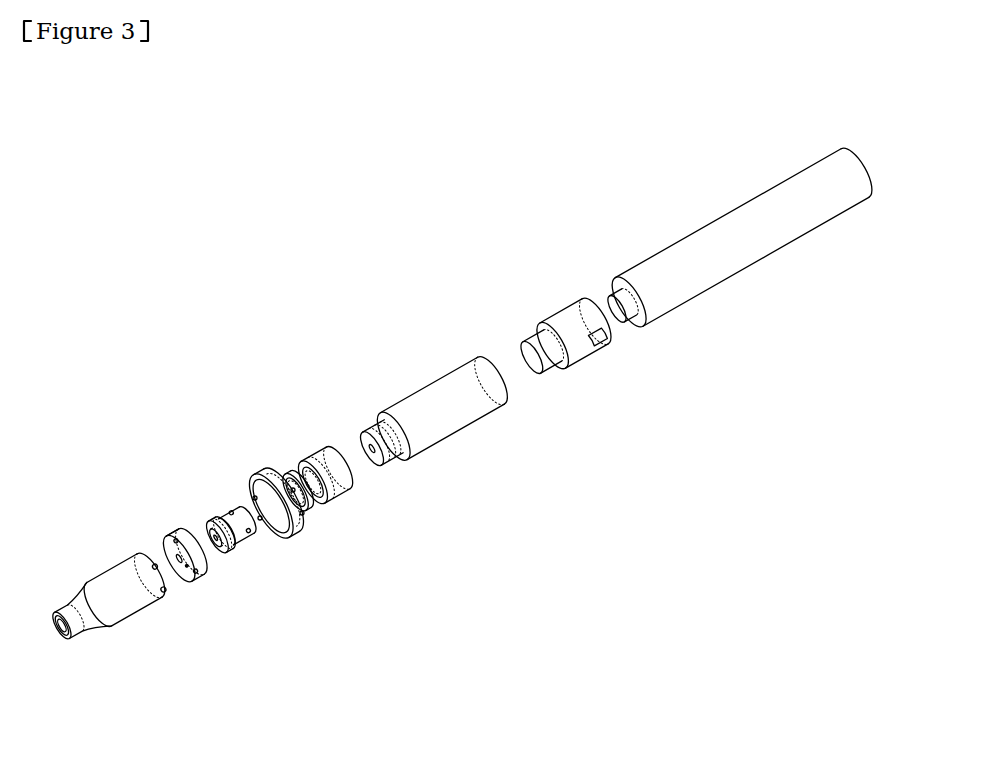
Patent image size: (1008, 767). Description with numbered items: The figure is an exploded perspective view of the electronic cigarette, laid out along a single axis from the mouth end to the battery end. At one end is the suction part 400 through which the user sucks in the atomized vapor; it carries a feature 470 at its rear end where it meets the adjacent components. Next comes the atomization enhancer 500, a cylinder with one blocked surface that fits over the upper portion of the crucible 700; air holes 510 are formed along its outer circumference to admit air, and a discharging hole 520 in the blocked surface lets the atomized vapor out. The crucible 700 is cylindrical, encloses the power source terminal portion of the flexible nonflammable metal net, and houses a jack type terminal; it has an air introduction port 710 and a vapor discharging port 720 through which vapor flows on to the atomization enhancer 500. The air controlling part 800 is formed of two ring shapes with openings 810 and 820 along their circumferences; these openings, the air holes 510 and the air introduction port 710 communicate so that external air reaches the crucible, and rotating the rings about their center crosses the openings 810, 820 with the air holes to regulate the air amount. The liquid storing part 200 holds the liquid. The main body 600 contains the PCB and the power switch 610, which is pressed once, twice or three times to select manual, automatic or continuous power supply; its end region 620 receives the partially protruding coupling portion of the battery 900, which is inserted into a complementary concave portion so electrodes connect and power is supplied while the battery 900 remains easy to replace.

The liquid storing part 200 is at (445, 435).
The suction part 400 is at (132, 618).
The coupling protrusions 470 is at (162, 592).
The atomization enhancer 500 is at (186, 580).
The air holes 510 is at (198, 575).
The discharging hole 520 is at (175, 552).
The main body 600 is at (612, 391).
The power switch 610 is at (588, 360).
The rear cap flange 620 is at (600, 360).
The crucible 700 is at (236, 534).
The air introduction port 710 is at (245, 507).
The vapor discharging port 720 is at (223, 517).
The air controlling part 800 is at (295, 535).
The opening 810 is at (302, 516).
The opening 820 is at (325, 503).
The battery 900 is at (710, 282).